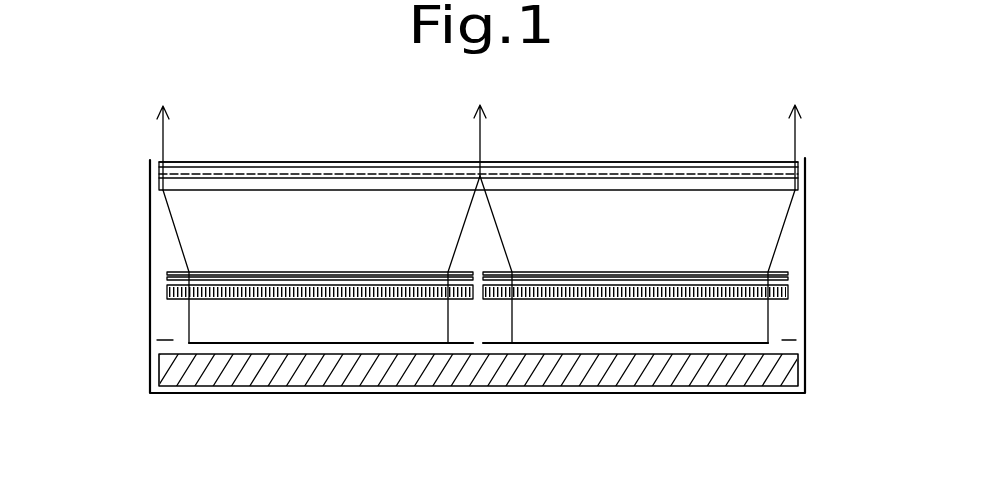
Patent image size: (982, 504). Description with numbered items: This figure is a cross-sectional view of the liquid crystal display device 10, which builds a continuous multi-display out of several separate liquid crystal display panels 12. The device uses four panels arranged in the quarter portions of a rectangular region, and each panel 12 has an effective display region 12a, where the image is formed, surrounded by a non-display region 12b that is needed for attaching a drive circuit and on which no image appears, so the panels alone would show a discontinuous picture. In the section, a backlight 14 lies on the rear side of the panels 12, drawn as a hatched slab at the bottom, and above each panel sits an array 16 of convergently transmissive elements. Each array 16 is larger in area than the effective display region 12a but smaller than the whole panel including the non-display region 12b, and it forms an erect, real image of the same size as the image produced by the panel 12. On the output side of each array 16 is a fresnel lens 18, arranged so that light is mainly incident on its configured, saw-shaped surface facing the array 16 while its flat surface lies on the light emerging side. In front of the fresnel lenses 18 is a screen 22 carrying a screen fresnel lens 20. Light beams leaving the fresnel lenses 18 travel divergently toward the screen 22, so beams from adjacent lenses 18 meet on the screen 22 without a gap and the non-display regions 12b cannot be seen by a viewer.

The liquid crystal display device 10 is at (636, 131).
The liquid crystal display panel 12 is at (235, 343).
The effective display region 12a is at (340, 341).
The non-display region 12b is at (157, 340).
The backlight 14 is at (166, 378).
The array of convergently transmissive elements 16 is at (167, 290).
The fresnel lens 18 is at (210, 271).
The screen fresnel lens 20 is at (176, 183).
The screen 22 is at (233, 163).